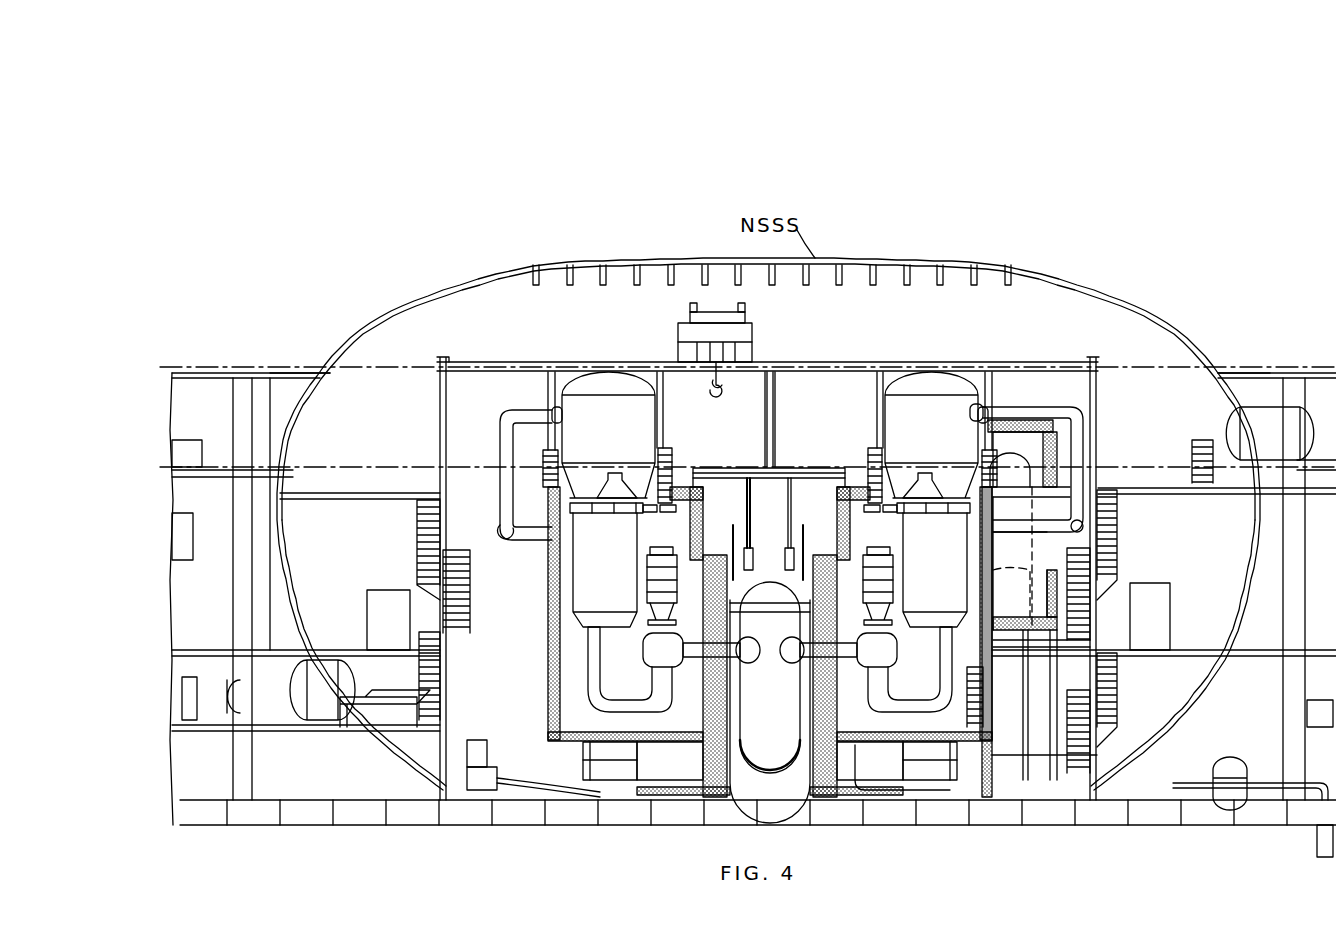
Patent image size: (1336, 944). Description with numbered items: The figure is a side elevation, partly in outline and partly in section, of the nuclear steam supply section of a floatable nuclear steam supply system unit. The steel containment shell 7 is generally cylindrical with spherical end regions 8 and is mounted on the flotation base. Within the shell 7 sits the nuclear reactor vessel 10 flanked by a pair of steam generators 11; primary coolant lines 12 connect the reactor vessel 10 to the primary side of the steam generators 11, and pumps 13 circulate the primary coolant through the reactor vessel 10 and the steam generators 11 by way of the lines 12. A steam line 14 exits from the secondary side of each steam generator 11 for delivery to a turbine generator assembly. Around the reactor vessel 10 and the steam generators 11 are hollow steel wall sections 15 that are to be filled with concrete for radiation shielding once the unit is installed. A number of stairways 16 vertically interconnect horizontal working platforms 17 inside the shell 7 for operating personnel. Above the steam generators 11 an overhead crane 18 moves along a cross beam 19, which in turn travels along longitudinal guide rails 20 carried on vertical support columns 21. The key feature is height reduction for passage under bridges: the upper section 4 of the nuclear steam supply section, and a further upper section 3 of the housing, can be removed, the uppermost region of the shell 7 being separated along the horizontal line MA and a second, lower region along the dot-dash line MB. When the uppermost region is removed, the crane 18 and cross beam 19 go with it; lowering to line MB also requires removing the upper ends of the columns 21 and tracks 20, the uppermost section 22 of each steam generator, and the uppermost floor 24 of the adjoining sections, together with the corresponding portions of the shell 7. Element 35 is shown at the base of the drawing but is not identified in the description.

The upper section of housing portion 3 is at (215, 400).
The upper section of nuclear steam supply section 4 is at (428, 300).
The steel containment shell 7 is at (1100, 290).
The spherical end regions 8 is at (363, 722).
The nuclear reactor vessel 10 is at (776, 736).
The steam generators 11 is at (573, 595).
The primary coolant lines 12 is at (737, 645).
The pumps 13 is at (662, 557).
The steam line 14 is at (998, 420).
The hollow steel wall sections 15 is at (690, 560).
The stairways 16 is at (1192, 458).
The horizontal working platforms 17 is at (1118, 488).
The overhead crane 18 is at (690, 316).
The cross beam 19 is at (752, 350).
The longitudinal guide rails 20 is at (447, 362).
The vertical support columns 21 is at (440, 410).
The uppermost section of steam generator 22 is at (643, 430).
The uppermost floor 24 is at (294, 373).
The foundation base 35 is at (240, 757).
The horizontal line MA is at (160, 367).
The horizontal line MB is at (160, 467).